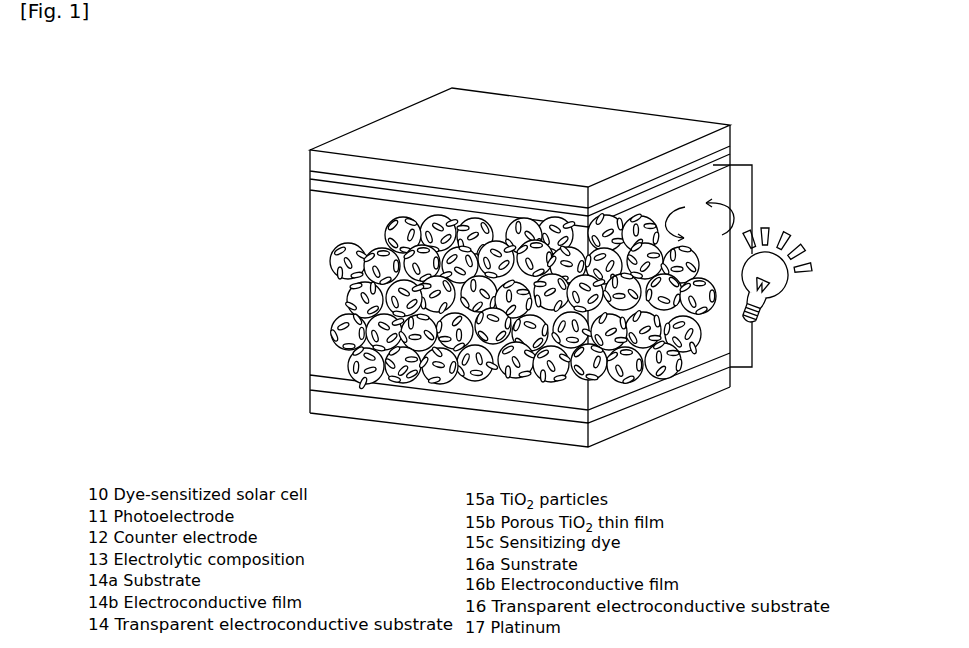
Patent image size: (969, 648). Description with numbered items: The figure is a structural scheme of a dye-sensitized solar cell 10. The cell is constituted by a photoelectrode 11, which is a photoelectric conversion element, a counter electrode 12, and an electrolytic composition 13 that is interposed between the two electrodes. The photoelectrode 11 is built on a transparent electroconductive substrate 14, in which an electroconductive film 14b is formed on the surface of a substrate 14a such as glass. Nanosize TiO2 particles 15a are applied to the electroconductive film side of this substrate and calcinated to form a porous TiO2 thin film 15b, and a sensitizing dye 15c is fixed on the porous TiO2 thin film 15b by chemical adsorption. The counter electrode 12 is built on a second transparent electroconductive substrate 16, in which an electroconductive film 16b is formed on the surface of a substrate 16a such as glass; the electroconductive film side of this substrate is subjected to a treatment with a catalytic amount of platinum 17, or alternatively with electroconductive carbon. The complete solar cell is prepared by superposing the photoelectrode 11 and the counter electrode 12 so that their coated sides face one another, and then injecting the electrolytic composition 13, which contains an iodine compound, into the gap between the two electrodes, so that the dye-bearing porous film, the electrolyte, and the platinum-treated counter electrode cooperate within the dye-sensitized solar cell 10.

The dye-sensitized solar cell 10 is at (253, 53).
The photoelectrode 11 is at (192, 298).
The counter electrode 12 is at (203, 138).
The electrolytic composition part 13 is at (322, 245).
The transparent electroconductive substrate 14 is at (233, 377).
The substrate 14a is at (322, 404).
The electroconductive film 14b is at (322, 389).
The TiO2 particles 15a is at (372, 378).
The porous TiO2 thin film 15b is at (310, 373).
The sensitizing dye 15c is at (410, 382).
The transparent electroconductive substrate 16 is at (233, 131).
The substrate 16a is at (322, 162).
The electroconductive film 16b is at (322, 177).
The platinum 17 is at (322, 188).